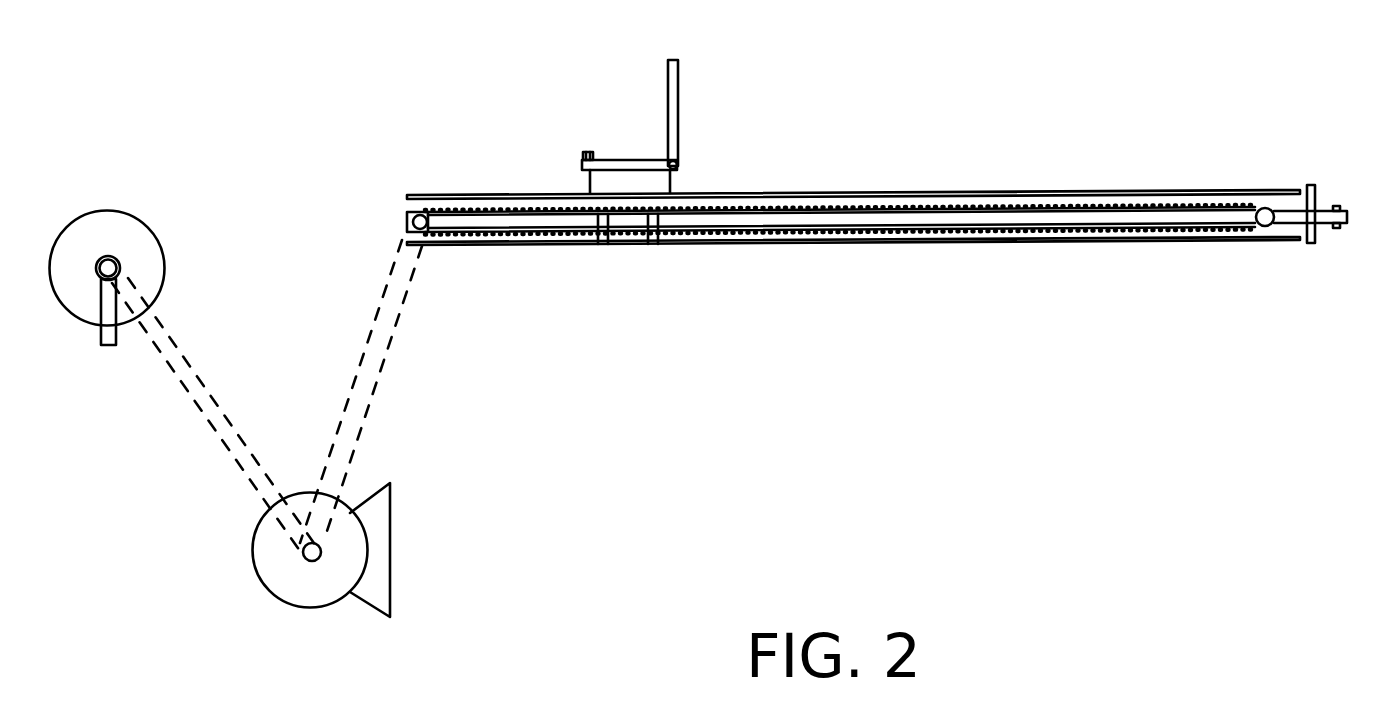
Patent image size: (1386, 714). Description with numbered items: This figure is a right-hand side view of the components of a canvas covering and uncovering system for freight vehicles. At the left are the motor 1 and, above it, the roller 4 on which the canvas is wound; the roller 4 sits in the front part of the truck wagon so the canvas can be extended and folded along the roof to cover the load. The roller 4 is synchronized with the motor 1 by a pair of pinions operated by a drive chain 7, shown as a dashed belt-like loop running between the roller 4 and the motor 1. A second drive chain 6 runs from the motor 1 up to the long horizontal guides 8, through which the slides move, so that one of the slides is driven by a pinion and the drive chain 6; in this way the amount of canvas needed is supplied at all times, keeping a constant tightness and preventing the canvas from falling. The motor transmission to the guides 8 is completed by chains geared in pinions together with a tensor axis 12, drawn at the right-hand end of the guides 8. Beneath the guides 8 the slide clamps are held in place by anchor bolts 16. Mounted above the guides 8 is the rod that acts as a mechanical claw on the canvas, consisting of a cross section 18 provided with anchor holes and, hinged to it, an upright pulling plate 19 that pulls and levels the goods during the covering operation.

The motor 1 is at (262, 582).
The roller 4 is at (145, 218).
The drive chain 6 is at (357, 377).
The drive chain 7 is at (187, 393).
The guides 8 is at (962, 246).
The tensor axis 12 is at (1320, 203).
The anchor bolts 16 is at (605, 248).
The cross section 18 is at (634, 158).
The pulling plate 19 is at (678, 104).